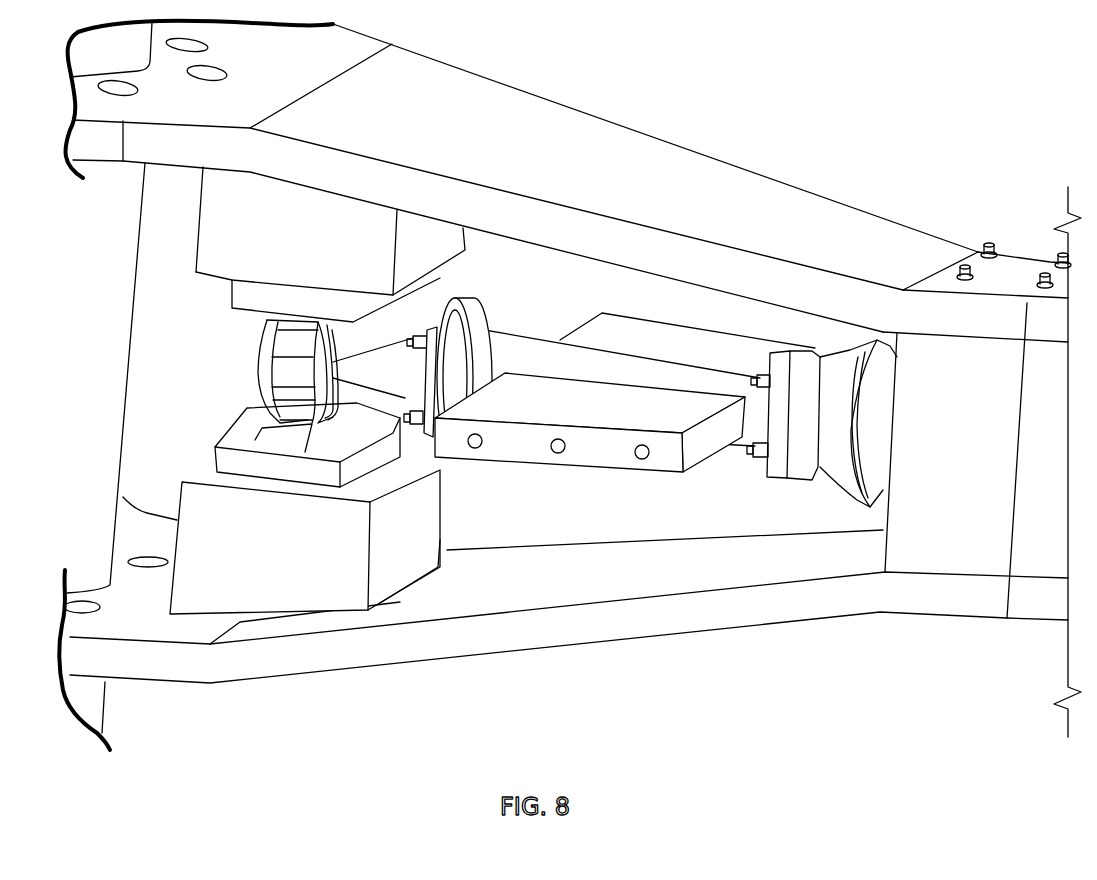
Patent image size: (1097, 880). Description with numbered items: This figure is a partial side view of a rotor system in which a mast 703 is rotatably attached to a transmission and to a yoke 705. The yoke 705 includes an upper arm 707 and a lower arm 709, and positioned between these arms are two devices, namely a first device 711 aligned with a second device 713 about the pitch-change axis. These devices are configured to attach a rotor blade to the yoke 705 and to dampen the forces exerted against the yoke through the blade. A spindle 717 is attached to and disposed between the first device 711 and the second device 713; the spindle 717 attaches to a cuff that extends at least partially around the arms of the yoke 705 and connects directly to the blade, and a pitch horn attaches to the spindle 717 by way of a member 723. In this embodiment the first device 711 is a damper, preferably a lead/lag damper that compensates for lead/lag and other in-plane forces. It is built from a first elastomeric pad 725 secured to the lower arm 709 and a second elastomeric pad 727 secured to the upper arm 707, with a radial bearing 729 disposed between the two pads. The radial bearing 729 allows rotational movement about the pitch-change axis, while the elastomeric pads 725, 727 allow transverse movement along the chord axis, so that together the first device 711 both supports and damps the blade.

The mast 703 is at (105, 710).
The yoke 705 is at (570, 389).
The upper arm 707 is at (607, 118).
The lower arm 709 is at (548, 648).
The first device 711 is at (163, 320).
The second device 713 is at (867, 333).
The spindle 717 is at (568, 475).
The member 723 is at (602, 313).
The first elastomeric pad 725 is at (213, 450).
The second elastomeric pad 727 is at (258, 320).
The radial bearing 729 is at (258, 368).